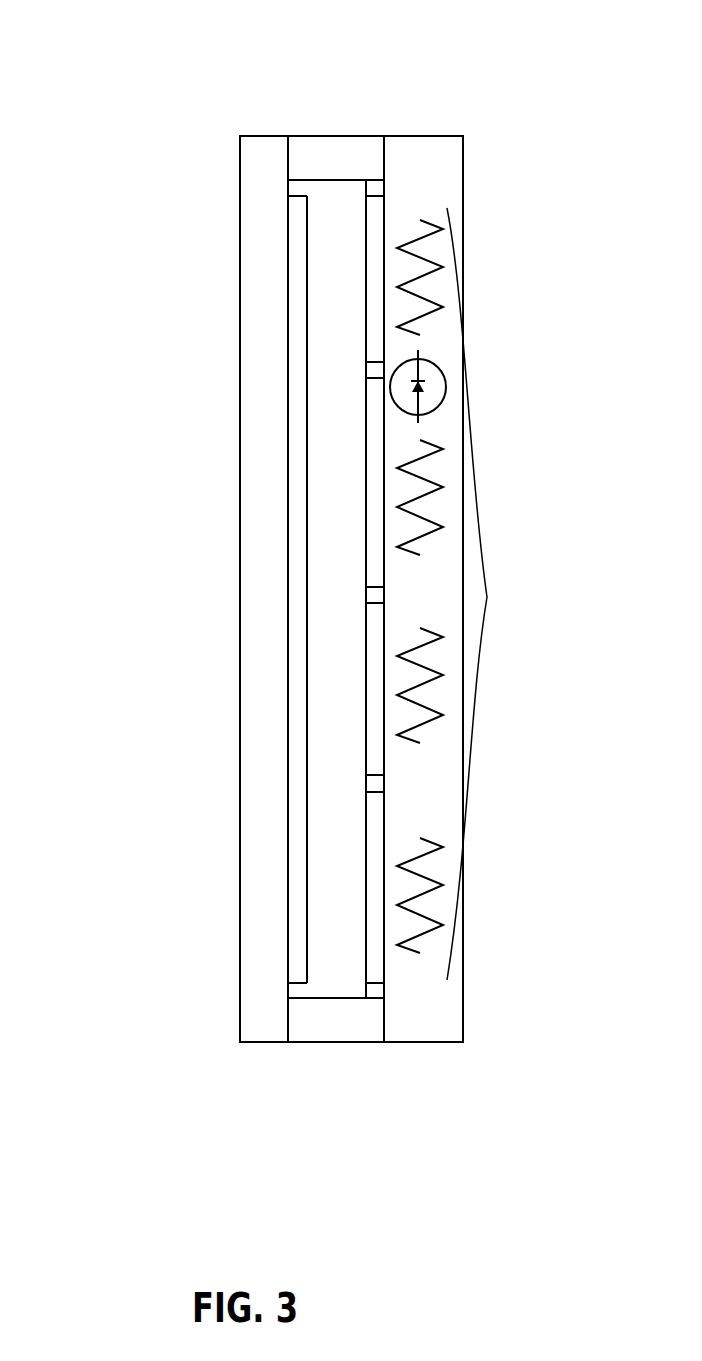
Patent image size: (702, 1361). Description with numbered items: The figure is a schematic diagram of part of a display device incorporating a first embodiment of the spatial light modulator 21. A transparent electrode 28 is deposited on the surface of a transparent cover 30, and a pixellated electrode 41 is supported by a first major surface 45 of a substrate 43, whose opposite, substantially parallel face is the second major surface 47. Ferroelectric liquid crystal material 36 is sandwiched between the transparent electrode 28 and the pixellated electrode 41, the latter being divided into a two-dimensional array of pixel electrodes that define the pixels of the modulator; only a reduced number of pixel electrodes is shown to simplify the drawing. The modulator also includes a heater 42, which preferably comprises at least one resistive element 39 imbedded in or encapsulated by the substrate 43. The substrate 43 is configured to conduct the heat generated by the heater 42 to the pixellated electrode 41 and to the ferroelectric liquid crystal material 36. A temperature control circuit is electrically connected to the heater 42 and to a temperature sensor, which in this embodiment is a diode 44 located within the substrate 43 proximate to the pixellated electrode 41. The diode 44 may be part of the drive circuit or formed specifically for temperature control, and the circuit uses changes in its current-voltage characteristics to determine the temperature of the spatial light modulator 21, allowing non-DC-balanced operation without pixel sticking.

The spatial light modulator 21 is at (389, 30).
The transparent electrode 28 is at (287, 823).
The transparent cover 30 is at (258, 632).
The ferroelectric liquid crystal material 36 is at (337, 192).
The resistive element 39 is at (433, 490).
The pixellated electrode 41 is at (377, 192).
The heater 42 is at (487, 597).
The substrate 43 is at (442, 832).
The diode 44 is at (440, 408).
The first major surface 45 is at (382, 957).
The second major surface 47 is at (463, 188).